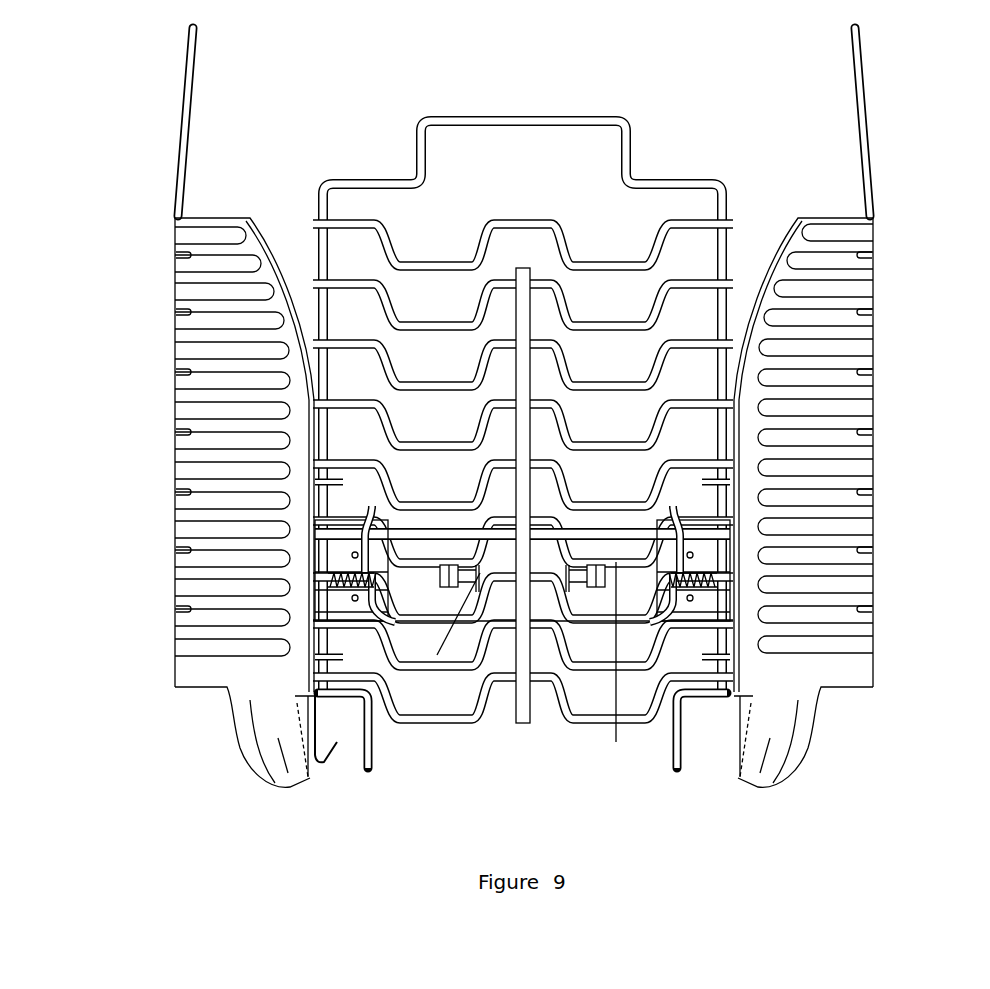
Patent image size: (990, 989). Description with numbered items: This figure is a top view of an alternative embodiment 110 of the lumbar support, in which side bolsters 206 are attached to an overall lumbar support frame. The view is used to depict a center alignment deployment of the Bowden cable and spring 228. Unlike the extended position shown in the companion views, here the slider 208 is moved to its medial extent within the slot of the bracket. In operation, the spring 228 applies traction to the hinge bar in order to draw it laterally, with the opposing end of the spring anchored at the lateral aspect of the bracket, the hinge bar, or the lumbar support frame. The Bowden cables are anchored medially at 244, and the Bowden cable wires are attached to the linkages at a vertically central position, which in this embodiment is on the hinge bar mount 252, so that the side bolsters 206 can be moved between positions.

The alternative embodiment 110 is at (902, 164).
The side bolsters 206 is at (197, 322).
The slider 208 is at (616, 742).
The spring 228 is at (703, 580).
The medial anchor of the Bowden cables 244 is at (437, 655).
The hinge bar mount 252 is at (337, 742).